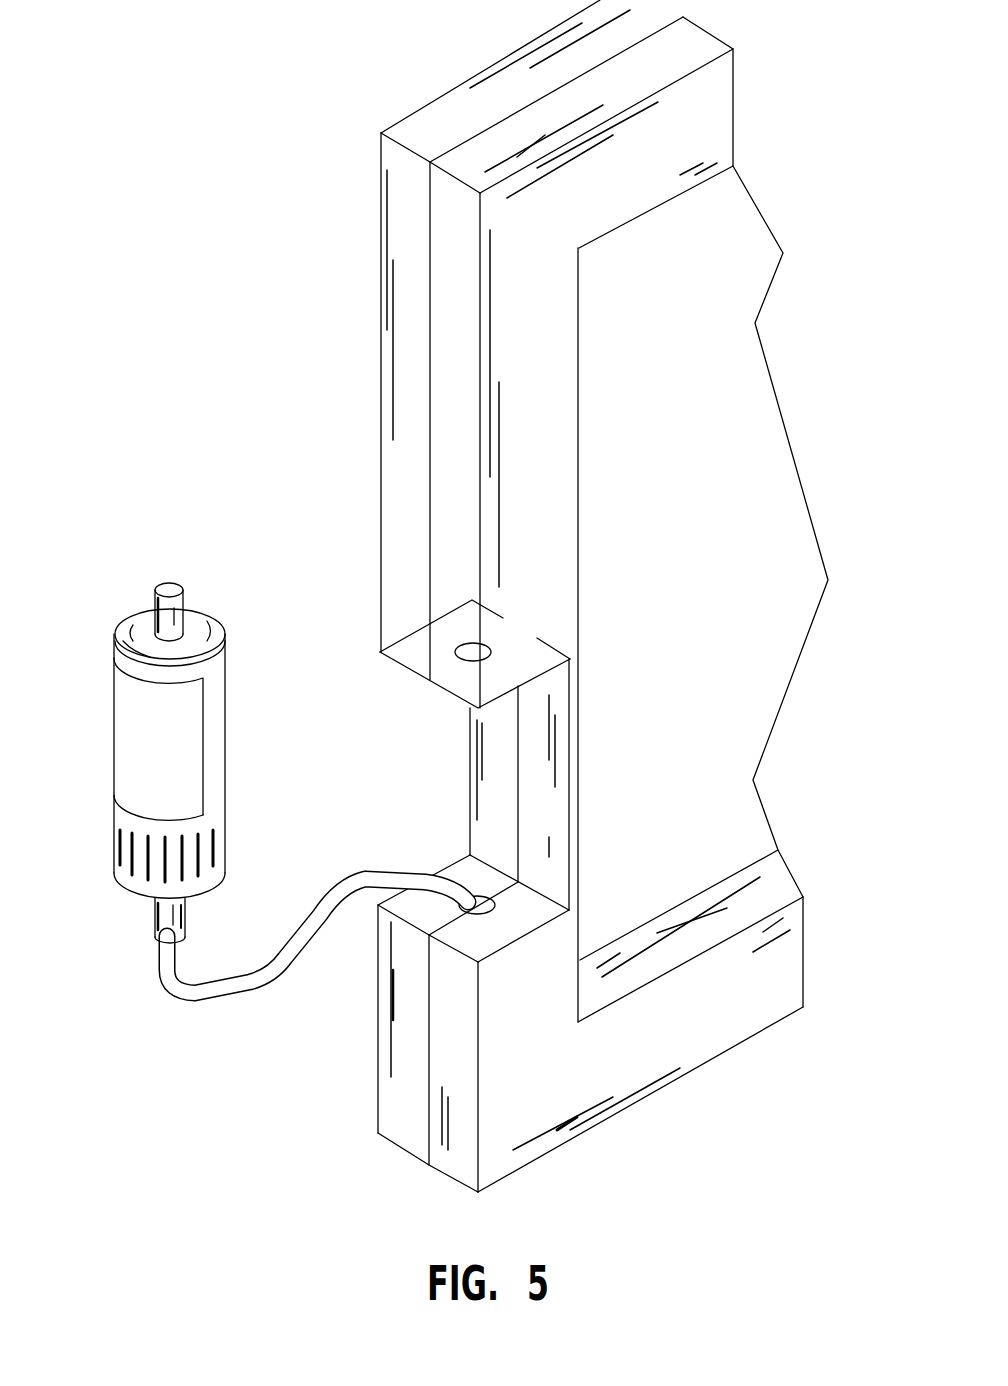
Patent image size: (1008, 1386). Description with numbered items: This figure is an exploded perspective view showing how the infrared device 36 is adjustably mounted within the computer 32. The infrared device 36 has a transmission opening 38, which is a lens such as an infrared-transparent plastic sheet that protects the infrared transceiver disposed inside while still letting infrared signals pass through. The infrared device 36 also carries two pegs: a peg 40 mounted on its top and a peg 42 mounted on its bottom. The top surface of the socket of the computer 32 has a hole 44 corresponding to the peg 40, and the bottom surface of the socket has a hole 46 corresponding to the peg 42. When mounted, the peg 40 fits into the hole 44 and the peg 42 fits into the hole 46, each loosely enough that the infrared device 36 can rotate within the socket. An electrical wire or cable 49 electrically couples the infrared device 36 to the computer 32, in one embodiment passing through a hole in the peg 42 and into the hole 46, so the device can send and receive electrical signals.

The computer 32 is at (380, 386).
The infrared device 36 is at (113, 847).
The transmission opening 38 is at (113, 750).
The peg 40 is at (153, 598).
The peg 42 is at (155, 928).
The hole 44 is at (465, 650).
The hole 46 is at (470, 896).
The electrical wire or cable 49 is at (277, 982).